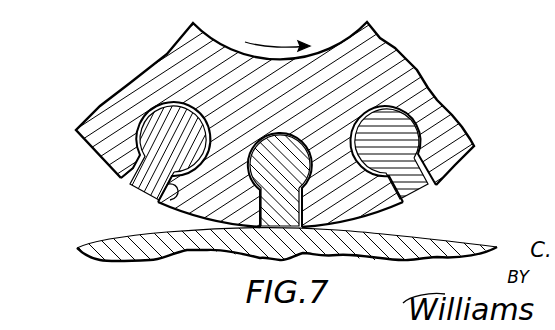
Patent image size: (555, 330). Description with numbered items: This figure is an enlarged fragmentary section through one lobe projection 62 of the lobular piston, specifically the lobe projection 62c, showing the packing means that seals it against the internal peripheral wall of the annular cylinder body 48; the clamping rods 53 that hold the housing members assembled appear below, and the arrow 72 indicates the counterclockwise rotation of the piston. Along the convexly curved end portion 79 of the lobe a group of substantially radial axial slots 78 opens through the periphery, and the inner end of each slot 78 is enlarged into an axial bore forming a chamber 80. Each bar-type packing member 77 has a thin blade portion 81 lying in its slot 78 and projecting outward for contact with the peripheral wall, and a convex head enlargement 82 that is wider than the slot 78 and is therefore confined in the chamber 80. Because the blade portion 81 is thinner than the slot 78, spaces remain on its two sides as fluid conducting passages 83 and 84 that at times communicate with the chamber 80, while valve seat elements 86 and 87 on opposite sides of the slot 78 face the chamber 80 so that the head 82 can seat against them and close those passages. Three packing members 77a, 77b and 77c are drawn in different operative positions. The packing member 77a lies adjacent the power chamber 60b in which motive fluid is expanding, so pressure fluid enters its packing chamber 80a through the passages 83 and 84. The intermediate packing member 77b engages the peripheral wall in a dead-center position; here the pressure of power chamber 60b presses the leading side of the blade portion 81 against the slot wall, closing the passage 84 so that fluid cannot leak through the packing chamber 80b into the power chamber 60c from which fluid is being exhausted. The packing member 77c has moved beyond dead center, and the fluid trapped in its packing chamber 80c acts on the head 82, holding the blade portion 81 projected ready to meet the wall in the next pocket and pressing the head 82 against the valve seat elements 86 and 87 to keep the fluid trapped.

The annular cylinder body 48 is at (150, 257).
The clamping rods 53 is at (77, 243).
The power chamber 60b is at (97, 211).
The power chamber 60c is at (475, 202).
The lobe projection 62 is at (459, 148).
The lobe projection 62c is at (102, 106).
The arrow 72 is at (282, 40).
The packing member 77 is at (408, 200).
The packing member 77a is at (166, 116).
The packing member 77b is at (264, 151).
The packing member 77c is at (422, 127).
The axial slot 78 is at (438, 157).
The convexly curved end portion 79 is at (214, 220).
The chamber 80 is at (398, 100).
The packing chamber 80a is at (188, 106).
The packing chamber 80b is at (288, 134).
The packing chamber 80c is at (384, 106).
The blade portion 81 is at (431, 187).
The head enlargement 82 is at (412, 117).
The fluid conducting passage 83 is at (398, 192).
The fluid conducting passage 84 is at (437, 173).
The valve seat element 86 is at (388, 174).
The valve seat element 87 is at (424, 140).